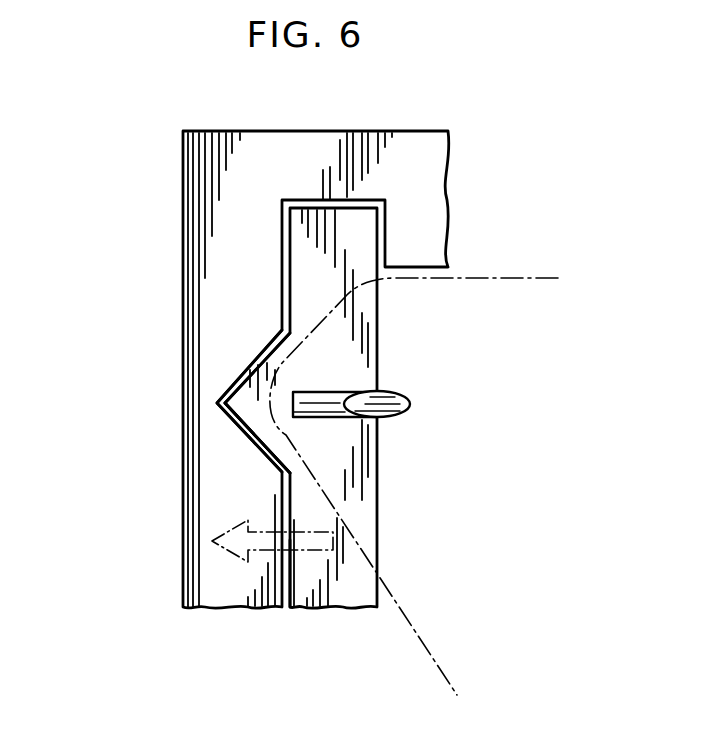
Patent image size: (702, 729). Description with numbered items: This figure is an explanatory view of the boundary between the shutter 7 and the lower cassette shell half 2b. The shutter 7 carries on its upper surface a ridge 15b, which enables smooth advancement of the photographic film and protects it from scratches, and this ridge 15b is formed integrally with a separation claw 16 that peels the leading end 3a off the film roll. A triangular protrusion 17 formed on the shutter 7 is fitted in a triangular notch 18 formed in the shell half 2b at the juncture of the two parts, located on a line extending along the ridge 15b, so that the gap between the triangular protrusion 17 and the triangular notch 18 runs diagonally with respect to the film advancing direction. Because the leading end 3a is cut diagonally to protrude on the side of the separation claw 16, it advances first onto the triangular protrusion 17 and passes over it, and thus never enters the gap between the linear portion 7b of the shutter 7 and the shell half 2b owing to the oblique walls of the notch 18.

The shell half 2b is at (166, 291).
The shutter 7 is at (334, 205).
The linear portion of the shutter 7b is at (292, 568).
The ridge 15b is at (298, 402).
The separation claw 16 is at (400, 391).
The triangular protrusion 17 is at (273, 443).
The triangular notch 18 is at (240, 432).
The leading end 3a is at (417, 635).